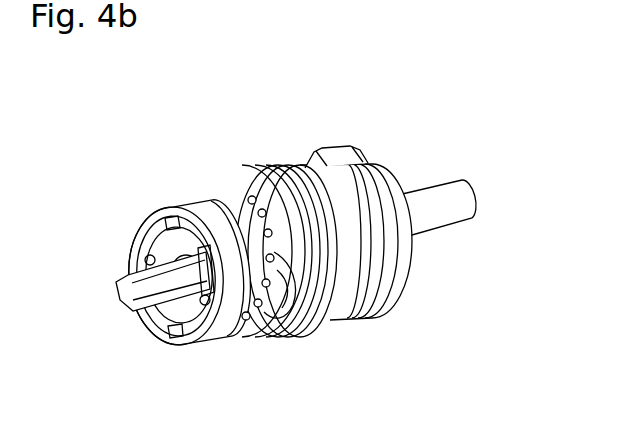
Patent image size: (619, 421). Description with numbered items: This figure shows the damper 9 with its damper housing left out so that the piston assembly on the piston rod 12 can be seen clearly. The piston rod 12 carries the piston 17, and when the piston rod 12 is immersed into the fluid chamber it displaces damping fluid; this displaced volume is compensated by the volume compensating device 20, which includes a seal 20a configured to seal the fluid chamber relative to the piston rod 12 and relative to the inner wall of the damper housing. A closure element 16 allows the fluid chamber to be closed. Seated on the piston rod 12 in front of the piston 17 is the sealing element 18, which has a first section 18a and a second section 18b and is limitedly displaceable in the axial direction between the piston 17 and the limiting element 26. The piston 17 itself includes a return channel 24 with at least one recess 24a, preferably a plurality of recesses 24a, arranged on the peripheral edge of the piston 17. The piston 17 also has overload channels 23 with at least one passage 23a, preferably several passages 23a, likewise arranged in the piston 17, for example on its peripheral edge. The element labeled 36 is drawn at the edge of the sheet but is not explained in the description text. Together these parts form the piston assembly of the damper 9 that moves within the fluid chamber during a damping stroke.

The damper 9 is at (468, 148).
The piston rod 12 is at (462, 208).
The closure element 16 is at (345, 157).
The piston 17 is at (260, 330).
The sealing element 18 is at (162, 268).
The first section 18a is at (180, 210).
The second section 18b is at (205, 200).
The volume compensating device 20 is at (390, 268).
The seal 20a is at (335, 317).
The overload channels 23 is at (282, 205).
The passage 23a is at (247, 205).
The return channel 24 is at (239, 238).
The recess 24a is at (232, 196).
The limiting element 26 is at (160, 252).
The plug 36 is at (604, 391).